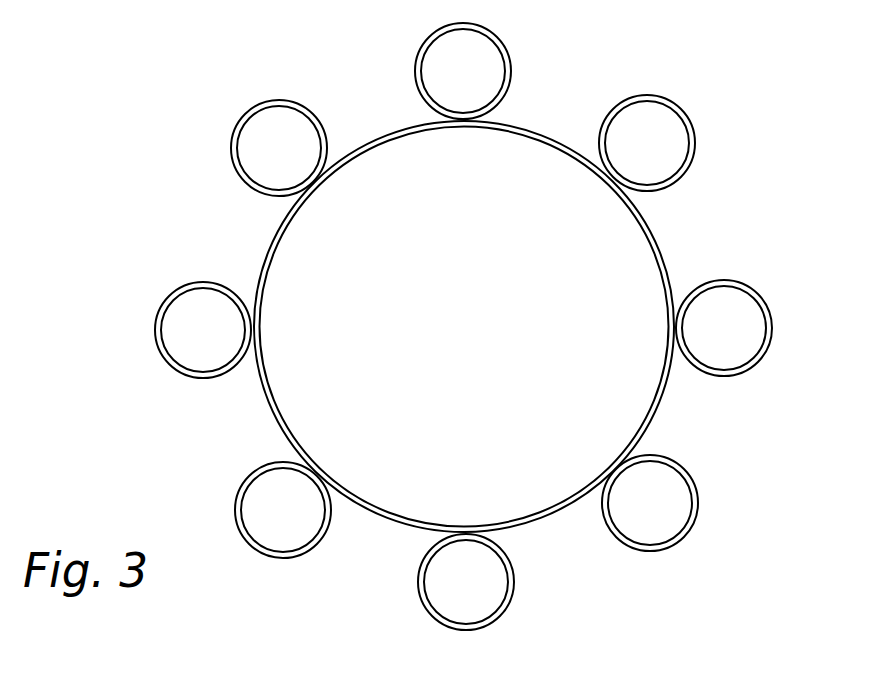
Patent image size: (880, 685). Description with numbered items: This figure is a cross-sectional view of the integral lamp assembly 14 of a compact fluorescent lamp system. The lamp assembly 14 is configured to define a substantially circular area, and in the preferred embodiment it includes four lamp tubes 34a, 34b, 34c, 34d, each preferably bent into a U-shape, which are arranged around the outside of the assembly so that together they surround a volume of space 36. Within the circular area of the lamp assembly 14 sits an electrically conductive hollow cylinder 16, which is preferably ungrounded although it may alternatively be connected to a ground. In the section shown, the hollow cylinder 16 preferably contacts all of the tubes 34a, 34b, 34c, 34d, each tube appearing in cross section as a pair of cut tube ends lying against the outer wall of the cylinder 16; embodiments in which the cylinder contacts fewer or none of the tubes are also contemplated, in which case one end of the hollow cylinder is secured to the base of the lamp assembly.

The lamp assembly 14 is at (128, 189).
The hollow cylinder 16 is at (672, 412).
The volume of space 36 is at (503, 240).
The lamp tube 34a is at (180, 287).
The lamp tube 34b is at (419, 590).
The lamp tube 34c is at (679, 104).
The lamp tube 34d is at (415, 73).